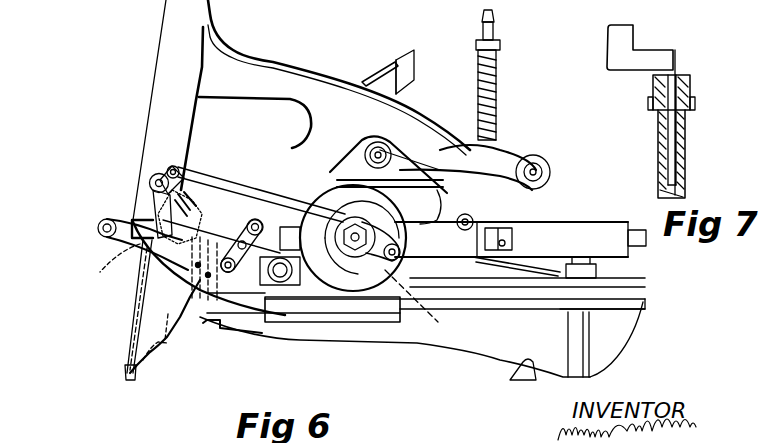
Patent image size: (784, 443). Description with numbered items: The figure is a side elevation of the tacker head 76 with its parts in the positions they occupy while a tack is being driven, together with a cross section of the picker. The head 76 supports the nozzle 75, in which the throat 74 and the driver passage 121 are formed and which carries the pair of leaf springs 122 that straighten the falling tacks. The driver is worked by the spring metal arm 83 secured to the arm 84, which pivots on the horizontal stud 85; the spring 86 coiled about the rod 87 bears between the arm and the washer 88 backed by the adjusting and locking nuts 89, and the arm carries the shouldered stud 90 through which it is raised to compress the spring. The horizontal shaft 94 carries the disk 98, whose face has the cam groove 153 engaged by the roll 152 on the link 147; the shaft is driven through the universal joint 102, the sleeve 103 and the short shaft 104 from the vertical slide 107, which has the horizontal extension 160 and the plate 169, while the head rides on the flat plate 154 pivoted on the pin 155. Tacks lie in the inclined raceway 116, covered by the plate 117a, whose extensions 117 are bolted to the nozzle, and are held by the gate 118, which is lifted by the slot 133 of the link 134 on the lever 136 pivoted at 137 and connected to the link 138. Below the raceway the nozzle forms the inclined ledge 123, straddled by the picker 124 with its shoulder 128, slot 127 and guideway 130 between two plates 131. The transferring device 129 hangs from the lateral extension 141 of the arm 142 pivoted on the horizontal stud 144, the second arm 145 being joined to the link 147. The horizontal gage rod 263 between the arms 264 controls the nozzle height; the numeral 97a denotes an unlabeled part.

In FIG. 6, the head 76 is at (218, 49).
In FIG. 6, the plate 117a is at (368, 80).
In FIG. 6, the inclined raceway 116 is at (410, 70).
In FIG. 6, the spring 86 is at (478, 92).
In FIG. 6, the rod 87 is at (496, 18).
In FIG. 6, the washer 88 is at (500, 44).
In FIG. 6, the adjusting and locking nuts 89 is at (483, 24).
In FIG. 6, the arm 84 is at (510, 156).
In FIG. 6, the horizontal stud 85 is at (537, 166).
In FIG. 6, the shouldered stud 90 is at (400, 147).
In FIG. 6, the spring metal arm 83 is at (352, 172).
In FIG. 6, the horizontal shaft 94 is at (350, 270).
In FIG. 6, the cam groove 153 is at (369, 276).
In FIG. 6, the roll 152 is at (412, 302).
In FIG. 6, the sleeve 103 is at (555, 218).
In FIG. 6, the short shaft 104 is at (616, 232).
In FIG. 6, the universal joint 102 is at (480, 262).
In FIG. 6, the flat plate 154 is at (600, 286).
In FIG. 6, the pin 155 is at (598, 268).
In FIG. 6, the plate 169 is at (598, 303).
In FIG. 6, the vertical slide 107 is at (608, 340).
In FIG. 6, the base block 97a is at (303, 307).
In FIG. 6, the disk 98 is at (322, 283).
In FIG. 6, the link 138 is at (290, 227).
In FIG. 6, the link 147 is at (296, 214).
In FIG. 6, the link 134 is at (243, 200).
In FIG. 6, the slot 133 is at (226, 225).
In FIG. 6, the gate 118 is at (200, 212).
In FIG. 6, the shoulder 128 is at (180, 217).
In FIG. 6, the second arm 145 is at (163, 170).
In FIG. 6, the horizontal stud 144 is at (154, 176).
In FIG. 6, the arm 142 is at (165, 205).
In FIG. 7, the arm 142 is at (619, 32).
In FIG. 6, the plates 131 is at (163, 212).
In FIG. 7, the plates 131 is at (697, 110).
In FIG. 6, the transferring device 129 is at (115, 215).
In FIG. 7, the transferring device 129 is at (694, 76).
In FIG. 6, the horizontal gage rod 263 is at (98, 228).
In FIG. 6, the driver passage 121 is at (130, 240).
In FIG. 6, the arms 264 is at (160, 260).
In FIG. 6, the nozzle 75 is at (150, 320).
In FIG. 6, the throat 74 is at (140, 292).
In FIG. 6, the leaf springs 122 is at (126, 372).
In FIG. 6, the inclined ledge 123 is at (161, 343).
In FIG. 6, the picker 124 is at (192, 270).
In FIG. 7, the picker 124 is at (660, 155).
In FIG. 6, the extensions 117 is at (192, 306).
In FIG. 6, the lever 136 is at (215, 322).
In FIG. 6, the horizontal extension 160 is at (215, 323).
In FIG. 6, the pivot 137 is at (257, 323).
In FIG. 7, the lateral extension 141 is at (654, 54).
In FIG. 7, the guideway 130 is at (682, 72).
In FIG. 7, the slot 127 is at (680, 182).